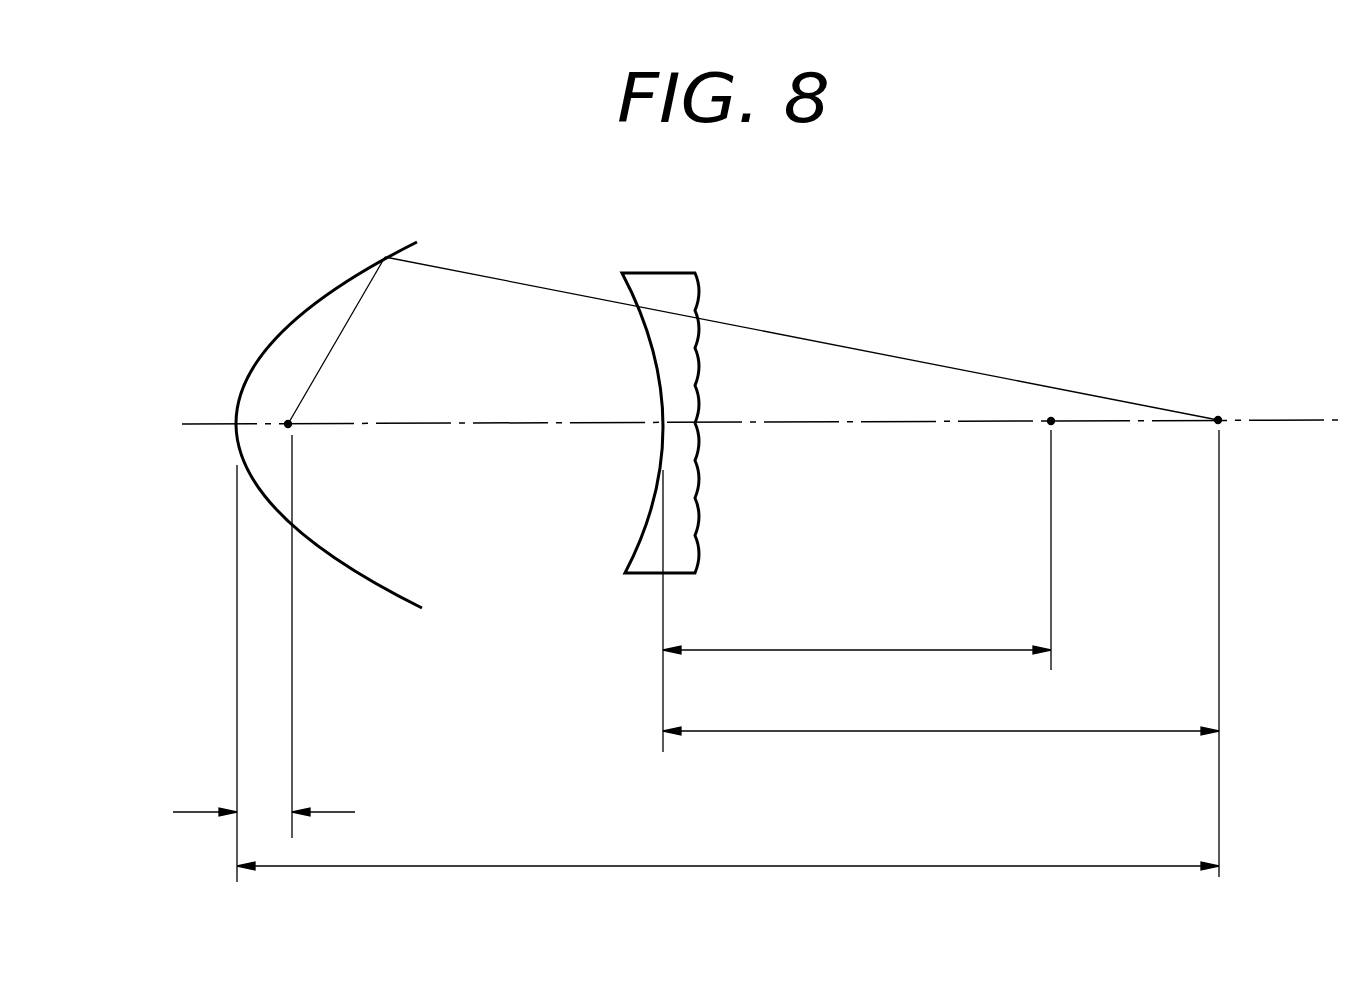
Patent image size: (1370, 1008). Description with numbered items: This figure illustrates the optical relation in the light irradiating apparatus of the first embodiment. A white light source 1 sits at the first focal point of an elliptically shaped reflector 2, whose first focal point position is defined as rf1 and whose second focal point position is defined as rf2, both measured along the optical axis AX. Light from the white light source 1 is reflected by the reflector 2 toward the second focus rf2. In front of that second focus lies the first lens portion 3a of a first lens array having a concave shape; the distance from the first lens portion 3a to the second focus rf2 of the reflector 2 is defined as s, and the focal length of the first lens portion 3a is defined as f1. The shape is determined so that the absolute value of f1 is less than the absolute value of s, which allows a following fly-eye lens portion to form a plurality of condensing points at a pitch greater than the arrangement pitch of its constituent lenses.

The white light source 1 is at (289, 432).
The elliptically shaped reflector 2 is at (357, 270).
The first lens portion 3a is at (621, 287).
The optical axis AX is at (910, 420).
The focal length of the first lens portion f1 is at (857, 633).
The distance from the first lens portion to the second focus s is at (941, 714).
The first focal point of the reflector rf1 is at (264, 812).
The second focal point of the reflector rf2 is at (728, 847).